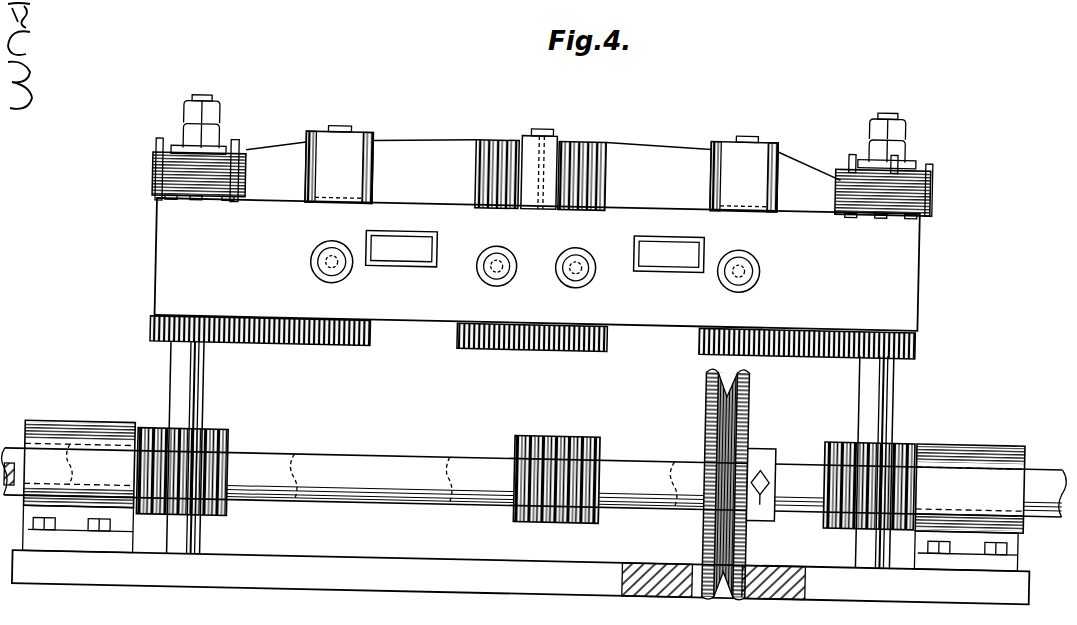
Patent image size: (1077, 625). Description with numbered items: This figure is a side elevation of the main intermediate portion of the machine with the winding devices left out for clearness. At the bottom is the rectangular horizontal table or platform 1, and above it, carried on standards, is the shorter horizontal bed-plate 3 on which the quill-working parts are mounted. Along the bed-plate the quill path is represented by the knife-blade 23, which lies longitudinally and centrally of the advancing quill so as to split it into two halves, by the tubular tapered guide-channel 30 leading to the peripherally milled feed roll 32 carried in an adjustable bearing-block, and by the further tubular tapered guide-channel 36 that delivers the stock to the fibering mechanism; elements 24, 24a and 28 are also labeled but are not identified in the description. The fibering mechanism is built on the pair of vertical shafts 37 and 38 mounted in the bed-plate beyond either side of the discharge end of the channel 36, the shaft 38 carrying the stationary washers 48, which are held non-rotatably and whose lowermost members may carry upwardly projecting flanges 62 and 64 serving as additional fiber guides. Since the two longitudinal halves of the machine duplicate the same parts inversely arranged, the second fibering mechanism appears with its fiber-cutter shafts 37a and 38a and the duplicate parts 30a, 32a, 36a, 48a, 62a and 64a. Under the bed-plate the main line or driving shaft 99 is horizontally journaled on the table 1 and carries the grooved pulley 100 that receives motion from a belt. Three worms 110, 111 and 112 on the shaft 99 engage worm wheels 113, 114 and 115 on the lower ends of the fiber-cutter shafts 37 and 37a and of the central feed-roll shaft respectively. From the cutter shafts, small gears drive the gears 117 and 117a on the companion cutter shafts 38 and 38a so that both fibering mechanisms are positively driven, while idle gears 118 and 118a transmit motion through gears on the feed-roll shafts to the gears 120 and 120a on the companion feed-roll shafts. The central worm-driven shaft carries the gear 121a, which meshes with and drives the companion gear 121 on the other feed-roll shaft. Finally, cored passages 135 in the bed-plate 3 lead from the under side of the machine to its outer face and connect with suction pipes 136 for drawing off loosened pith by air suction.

The table or platform 1 is at (580, 578).
The bed-plate 3 is at (537, 264).
The knife-blade 23 is at (548, 121).
The coil 24 is at (495, 140).
The coil 24a is at (583, 163).
The dial indicators 28 is at (535, 281).
The tubular tapered guide-channel 30 is at (384, 144).
The wire 30a is at (678, 146).
The feed roll 32 is at (327, 150).
The cylinder 32a is at (748, 150).
The tubular tapered guide-channel 36 is at (262, 154).
The wire 36a is at (800, 162).
The fiber-cutter shaft 37 is at (176, 380).
The fiber-cutter shaft 37a is at (896, 385).
The fiber-cutter shaft 38 is at (200, 94).
The companion fiber-cutter shaft 38a is at (884, 98).
The washers 48 is at (210, 186).
The bracket 48a is at (876, 205).
The flange 62 is at (152, 178).
The laminated block 62a is at (930, 182).
The flange 64 is at (155, 160).
The post 64a is at (932, 160).
The main line or driving shaft 99 is at (494, 486).
The grooved pulley 100 is at (750, 400).
The worm 110 is at (233, 508).
The worm 111 is at (832, 510).
The worm 112 is at (605, 512).
The worm wheel 113 is at (300, 451).
The worm wheel 114 is at (985, 470).
The worm wheel 115 is at (680, 451).
The gear 117 is at (153, 330).
The gear 117a is at (918, 332).
The idle gear 118 is at (250, 318).
The idle gear 118a is at (812, 322).
The gear 120 is at (335, 322).
The gear 120a is at (735, 322).
The gear 121 is at (487, 328).
The gear 121a is at (560, 330).
The cored passages 135 is at (402, 248).
The suction pipes 136 is at (669, 254).